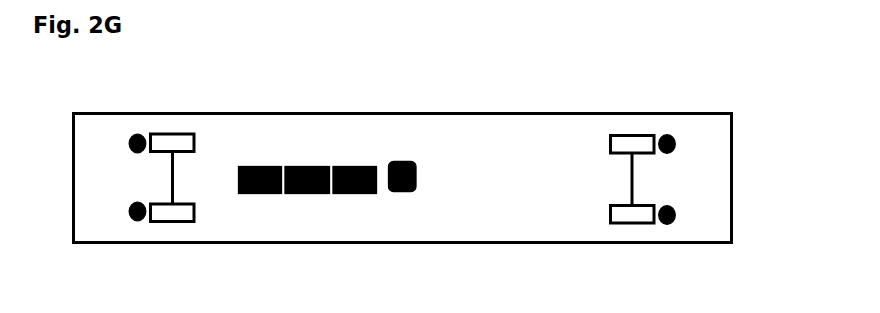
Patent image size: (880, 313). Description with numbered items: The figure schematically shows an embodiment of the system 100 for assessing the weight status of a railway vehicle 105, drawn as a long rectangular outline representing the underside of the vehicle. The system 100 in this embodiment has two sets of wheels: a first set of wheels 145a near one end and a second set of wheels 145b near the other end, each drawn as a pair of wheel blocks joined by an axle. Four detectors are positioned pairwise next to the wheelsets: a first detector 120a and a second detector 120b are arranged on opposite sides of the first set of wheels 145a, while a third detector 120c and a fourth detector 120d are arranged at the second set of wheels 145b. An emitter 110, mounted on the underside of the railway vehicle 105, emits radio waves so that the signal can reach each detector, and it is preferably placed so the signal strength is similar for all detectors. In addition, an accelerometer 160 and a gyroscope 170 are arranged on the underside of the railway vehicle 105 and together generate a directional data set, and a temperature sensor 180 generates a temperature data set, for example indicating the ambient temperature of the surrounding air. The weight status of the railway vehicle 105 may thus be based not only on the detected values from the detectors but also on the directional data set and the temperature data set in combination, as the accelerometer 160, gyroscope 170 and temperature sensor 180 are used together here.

The system 100 is at (249, 61).
The railway vehicle 105 is at (300, 113).
The emitter 110 is at (402, 160).
The first detector 120a is at (137, 134).
The second detector 120b is at (137, 222).
The third detector 120c is at (668, 135).
The fourth detector 120d is at (667, 224).
The first set of wheels 145a is at (170, 224).
The second set of wheels 145b is at (632, 224).
The accelerometer 160 is at (265, 194).
The gyroscope 170 is at (312, 194).
The temperature sensor 180 is at (362, 194).